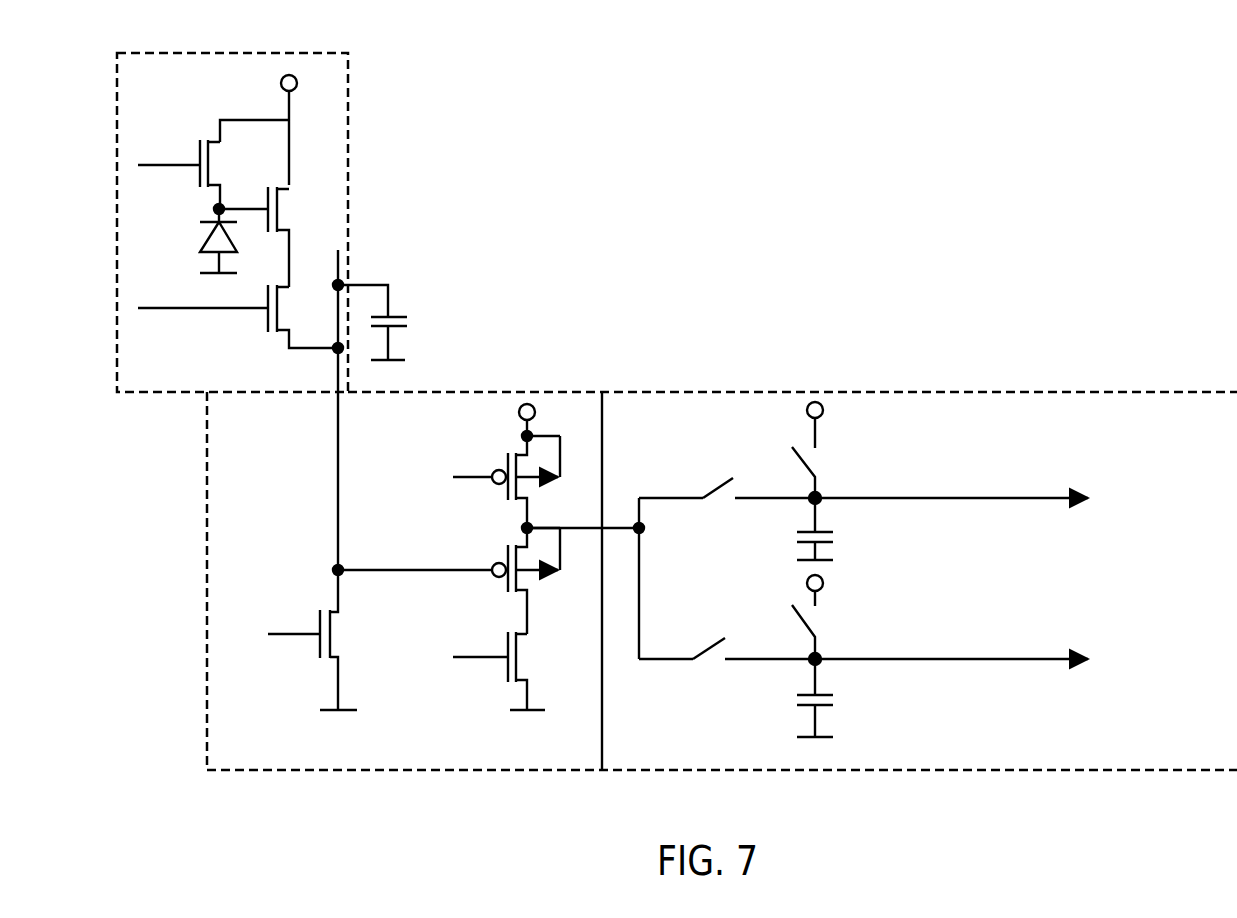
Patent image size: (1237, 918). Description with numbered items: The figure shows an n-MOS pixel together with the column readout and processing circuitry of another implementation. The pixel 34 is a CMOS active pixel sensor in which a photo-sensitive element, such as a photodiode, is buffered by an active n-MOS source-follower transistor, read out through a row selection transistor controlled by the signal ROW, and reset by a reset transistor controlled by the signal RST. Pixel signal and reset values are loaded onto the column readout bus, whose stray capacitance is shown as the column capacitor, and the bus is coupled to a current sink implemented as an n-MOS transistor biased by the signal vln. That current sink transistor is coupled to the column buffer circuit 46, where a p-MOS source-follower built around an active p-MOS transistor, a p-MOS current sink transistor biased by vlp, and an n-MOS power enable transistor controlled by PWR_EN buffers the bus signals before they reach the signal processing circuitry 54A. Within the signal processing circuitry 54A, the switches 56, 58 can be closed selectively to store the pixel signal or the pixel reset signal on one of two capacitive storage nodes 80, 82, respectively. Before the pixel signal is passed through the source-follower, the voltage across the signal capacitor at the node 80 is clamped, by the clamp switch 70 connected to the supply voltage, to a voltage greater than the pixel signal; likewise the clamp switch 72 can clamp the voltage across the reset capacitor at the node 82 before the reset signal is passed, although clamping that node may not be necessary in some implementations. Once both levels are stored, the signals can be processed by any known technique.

The pixel 34 is at (352, 88).
The column buffer circuit 46 is at (202, 692).
The signal processing circuitry 54A is at (861, 611).
The switch 56 is at (704, 668).
The switch 58 is at (724, 503).
The CLMP clamp switch 70 is at (792, 622).
The CLMP2 clamp switch 72 is at (791, 462).
The capacitive storage node 80 is at (826, 667).
The capacitive storage node 82 is at (826, 505).